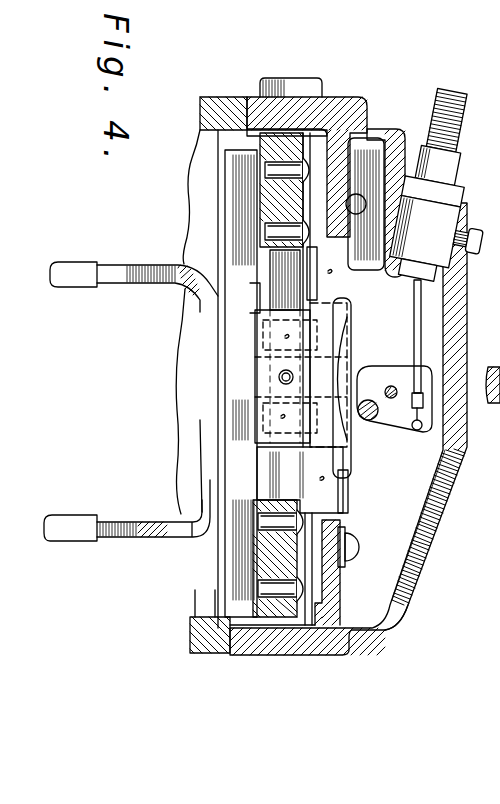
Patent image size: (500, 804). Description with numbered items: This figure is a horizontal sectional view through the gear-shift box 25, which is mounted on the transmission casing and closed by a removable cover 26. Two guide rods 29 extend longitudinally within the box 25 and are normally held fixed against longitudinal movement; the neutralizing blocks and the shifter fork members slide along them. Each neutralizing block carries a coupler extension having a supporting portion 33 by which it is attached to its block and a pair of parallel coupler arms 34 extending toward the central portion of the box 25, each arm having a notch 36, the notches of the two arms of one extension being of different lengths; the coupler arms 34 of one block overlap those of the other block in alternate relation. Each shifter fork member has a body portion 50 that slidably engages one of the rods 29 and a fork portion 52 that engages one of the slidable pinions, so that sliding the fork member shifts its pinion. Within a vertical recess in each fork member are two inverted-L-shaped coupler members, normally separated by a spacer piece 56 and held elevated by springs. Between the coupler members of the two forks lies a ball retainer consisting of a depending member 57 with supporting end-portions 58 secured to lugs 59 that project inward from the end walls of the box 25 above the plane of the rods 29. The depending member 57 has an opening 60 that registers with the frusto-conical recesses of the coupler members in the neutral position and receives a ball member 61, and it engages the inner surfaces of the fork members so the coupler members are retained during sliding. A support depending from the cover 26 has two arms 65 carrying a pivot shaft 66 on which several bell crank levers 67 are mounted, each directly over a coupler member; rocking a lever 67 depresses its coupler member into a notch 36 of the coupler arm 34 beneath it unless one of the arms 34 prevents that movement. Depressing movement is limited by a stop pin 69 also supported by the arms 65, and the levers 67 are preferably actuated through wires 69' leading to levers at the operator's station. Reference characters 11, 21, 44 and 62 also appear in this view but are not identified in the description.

The guide plate 11 is at (222, 383).
The bracket 21 is at (282, 130).
The gear-shift box 25 is at (310, 657).
The removable cover 26 is at (378, 645).
The guide rods 29 is at (197, 379).
The supporting portion 33 is at (250, 97).
The coupler arms 34 is at (222, 250).
The notch 36 is at (222, 415).
The arm 44 is at (492, 411).
The body portion 50 is at (300, 381).
The fork portion 52 is at (143, 287).
The spacer piece 56 is at (345, 425).
The depending member 57 is at (340, 476).
The supporting end-portions 58 is at (372, 540).
The lugs 59 is at (356, 250).
The opening 60 is at (293, 377).
The ball member 61 is at (285, 377).
The spigot 62 is at (318, 80).
The arms 65 is at (430, 432).
The pivot shaft 66 is at (388, 432).
The bell crank levers 67 is at (406, 432).
The stop pin 69 is at (400, 355).
The wires 69' is at (443, 220).